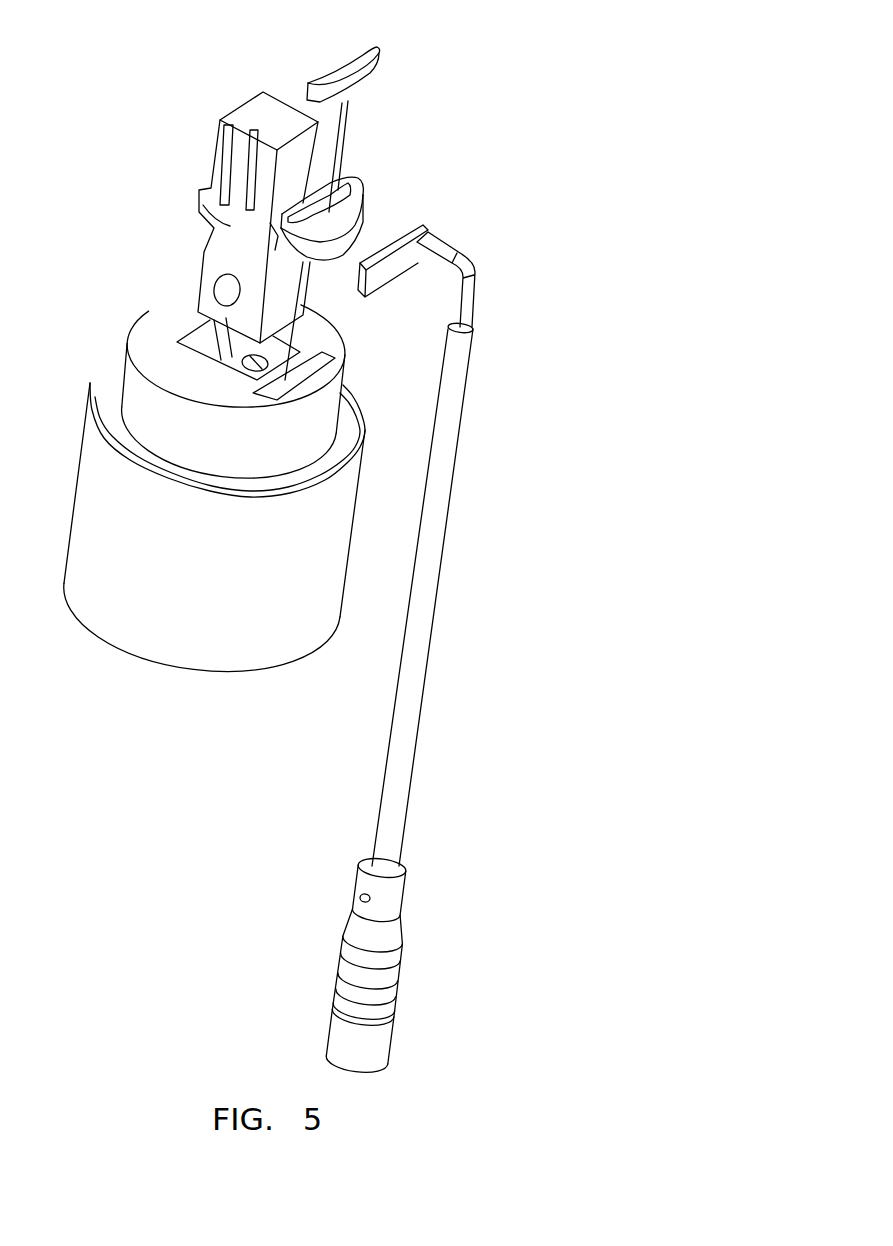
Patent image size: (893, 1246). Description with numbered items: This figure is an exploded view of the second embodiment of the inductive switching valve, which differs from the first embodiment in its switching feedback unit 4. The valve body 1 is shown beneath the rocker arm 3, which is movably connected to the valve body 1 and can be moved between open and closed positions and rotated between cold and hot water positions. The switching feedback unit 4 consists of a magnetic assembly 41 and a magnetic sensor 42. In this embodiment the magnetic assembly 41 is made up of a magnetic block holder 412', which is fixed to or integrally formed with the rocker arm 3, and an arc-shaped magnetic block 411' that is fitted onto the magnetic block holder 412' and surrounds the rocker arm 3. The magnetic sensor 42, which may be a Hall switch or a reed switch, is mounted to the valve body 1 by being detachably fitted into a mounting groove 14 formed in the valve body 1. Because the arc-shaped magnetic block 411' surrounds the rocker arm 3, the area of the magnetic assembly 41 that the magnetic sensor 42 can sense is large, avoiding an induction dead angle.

The valve body 1 is at (137, 417).
The rocker arm 3 is at (199, 198).
The switching feedback unit 4 is at (439, 157).
The magnetic assembly 41 is at (428, 139).
The arc-shaped magnetic block 411' is at (412, 115).
The magnetic block holder 412' is at (401, 183).
The magnetic sensor 42 is at (447, 238).
The mounting groove 14 is at (338, 360).